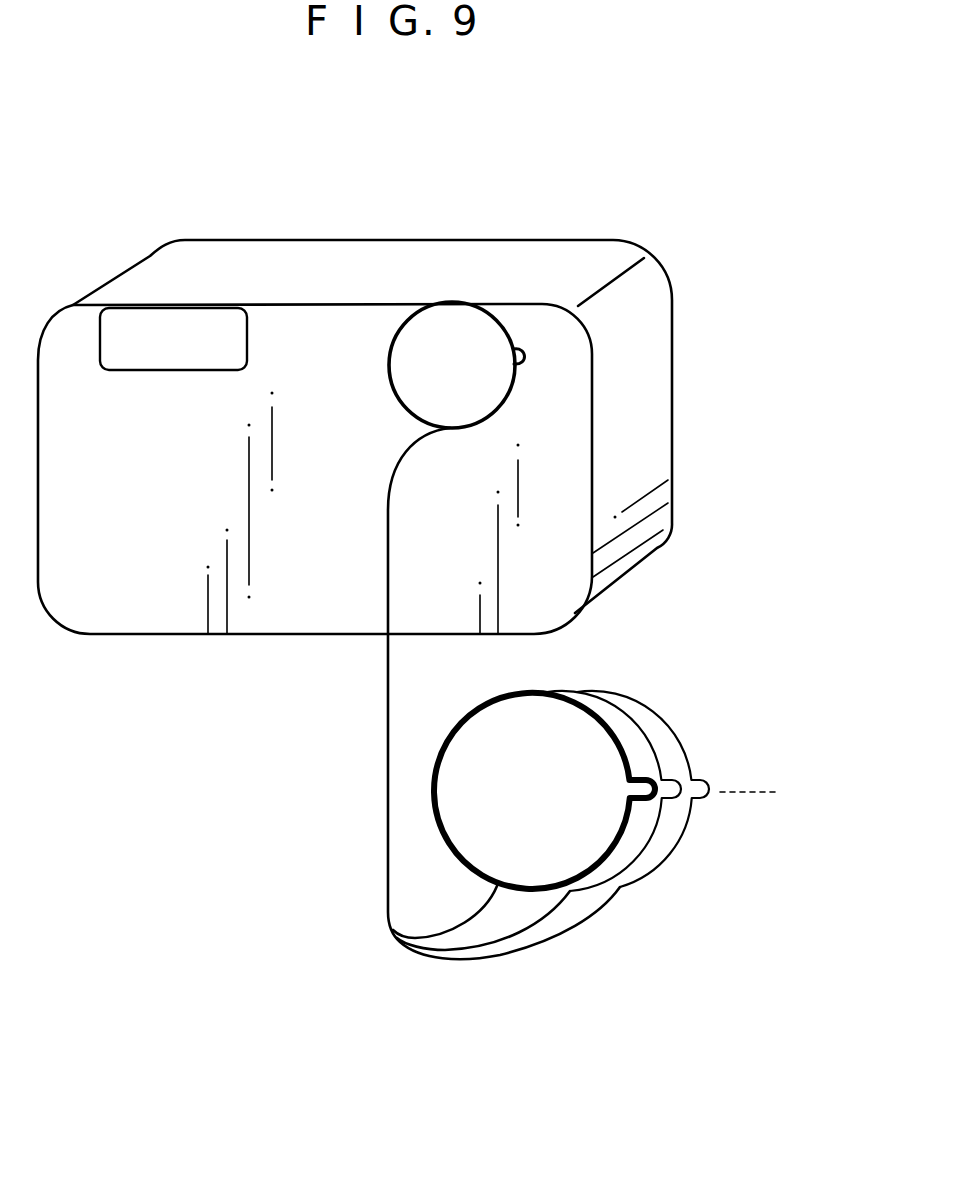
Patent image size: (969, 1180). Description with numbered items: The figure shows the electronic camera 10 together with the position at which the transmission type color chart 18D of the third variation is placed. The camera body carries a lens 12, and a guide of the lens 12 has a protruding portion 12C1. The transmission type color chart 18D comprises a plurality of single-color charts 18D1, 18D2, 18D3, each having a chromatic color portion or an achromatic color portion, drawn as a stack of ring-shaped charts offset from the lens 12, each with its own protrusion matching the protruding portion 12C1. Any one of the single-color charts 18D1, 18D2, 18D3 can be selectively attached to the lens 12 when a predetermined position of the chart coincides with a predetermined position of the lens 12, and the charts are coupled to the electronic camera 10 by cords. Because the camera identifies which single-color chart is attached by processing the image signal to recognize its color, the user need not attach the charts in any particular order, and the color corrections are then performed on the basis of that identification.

The electronic camera 10 is at (297, 252).
The lens 12 is at (411, 396).
The protruding portion of a guide of the lens 12C1 is at (520, 357).
The transmission type color chart 18D is at (853, 734).
The single-color chart 18D1 is at (537, 692).
The single-color chart 18D2 is at (640, 728).
The single-color chart 18D3 is at (688, 765).